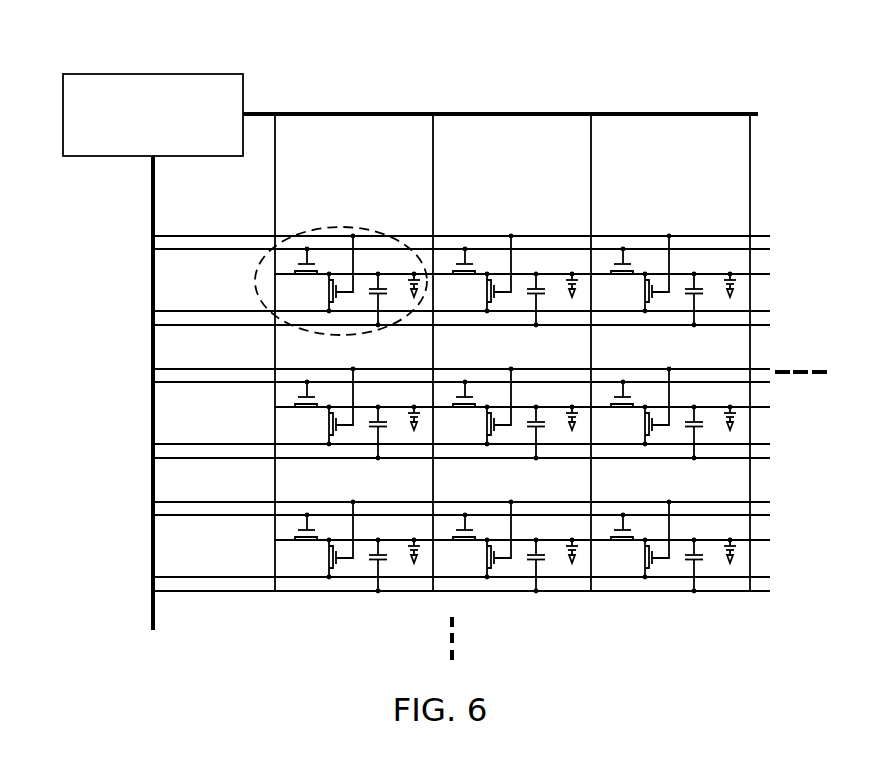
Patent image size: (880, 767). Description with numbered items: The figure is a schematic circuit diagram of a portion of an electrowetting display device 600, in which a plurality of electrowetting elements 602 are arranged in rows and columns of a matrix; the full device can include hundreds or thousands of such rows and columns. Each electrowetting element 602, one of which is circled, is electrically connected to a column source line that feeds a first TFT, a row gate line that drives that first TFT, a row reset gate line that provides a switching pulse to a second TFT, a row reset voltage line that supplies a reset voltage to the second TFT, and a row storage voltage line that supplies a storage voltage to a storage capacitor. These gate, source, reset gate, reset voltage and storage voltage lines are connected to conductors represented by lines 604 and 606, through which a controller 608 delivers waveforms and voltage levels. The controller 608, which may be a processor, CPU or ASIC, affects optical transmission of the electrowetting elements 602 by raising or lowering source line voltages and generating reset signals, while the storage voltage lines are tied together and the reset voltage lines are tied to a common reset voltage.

The electrowetting display device 600 is at (454, 334).
The electrowetting element 602 is at (312, 230).
The line 604 is at (178, 172).
The line 606 is at (347, 133).
The controller 608 is at (93, 146).